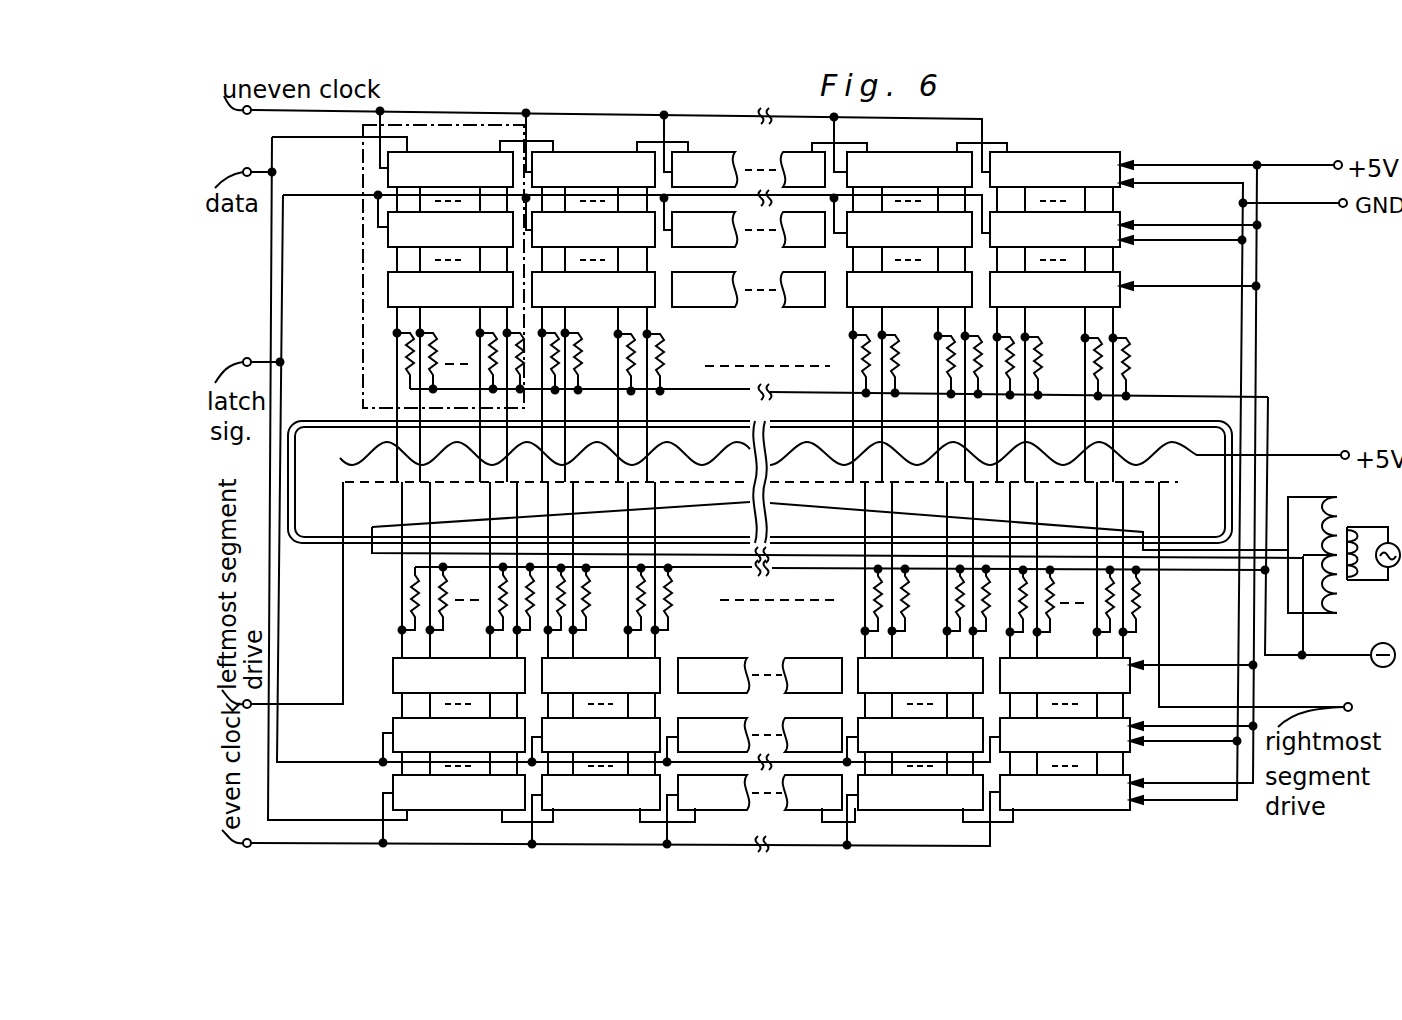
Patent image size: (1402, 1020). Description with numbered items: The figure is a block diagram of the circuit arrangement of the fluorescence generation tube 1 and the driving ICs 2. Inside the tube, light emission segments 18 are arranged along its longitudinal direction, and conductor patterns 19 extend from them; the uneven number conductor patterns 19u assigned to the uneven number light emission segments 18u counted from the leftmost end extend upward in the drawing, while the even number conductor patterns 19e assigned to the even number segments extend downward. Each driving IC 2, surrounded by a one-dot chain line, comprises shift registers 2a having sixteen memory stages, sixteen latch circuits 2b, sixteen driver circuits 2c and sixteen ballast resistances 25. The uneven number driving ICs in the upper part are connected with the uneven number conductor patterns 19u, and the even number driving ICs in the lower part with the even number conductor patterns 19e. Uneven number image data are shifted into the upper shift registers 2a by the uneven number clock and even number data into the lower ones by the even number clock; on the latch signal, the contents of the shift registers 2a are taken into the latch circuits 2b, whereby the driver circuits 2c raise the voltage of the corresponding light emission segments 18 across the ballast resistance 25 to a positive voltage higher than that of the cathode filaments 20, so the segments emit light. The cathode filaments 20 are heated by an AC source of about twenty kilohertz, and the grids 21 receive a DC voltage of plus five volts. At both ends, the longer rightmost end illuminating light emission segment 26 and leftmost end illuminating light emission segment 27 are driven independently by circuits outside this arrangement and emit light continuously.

The fluorescence generation tube 1 is at (1182, 420).
The driving IC 2 is at (470, 125).
The shift register 2a is at (388, 176).
The latch circuit 2b is at (388, 232).
The driver circuit 2c is at (388, 290).
The light emission segment 18 is at (703, 484).
The uneven number light emission segment 18u is at (415, 482).
The conductor pattern 19 is at (638, 462).
The even number conductor pattern 19e is at (430, 484).
The uneven number conductor pattern 19u is at (398, 466).
The cathode filament 20 is at (771, 503).
The grid 21 is at (770, 460).
The ballast resistance 25 is at (437, 360).
The rightmost end illuminating light emission segment 26 is at (1165, 483).
The leftmost end illuminating light emission segment 27 is at (343, 480).